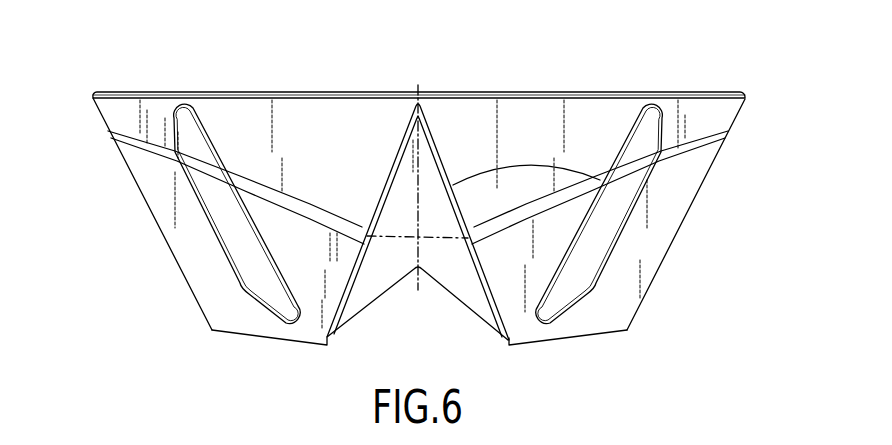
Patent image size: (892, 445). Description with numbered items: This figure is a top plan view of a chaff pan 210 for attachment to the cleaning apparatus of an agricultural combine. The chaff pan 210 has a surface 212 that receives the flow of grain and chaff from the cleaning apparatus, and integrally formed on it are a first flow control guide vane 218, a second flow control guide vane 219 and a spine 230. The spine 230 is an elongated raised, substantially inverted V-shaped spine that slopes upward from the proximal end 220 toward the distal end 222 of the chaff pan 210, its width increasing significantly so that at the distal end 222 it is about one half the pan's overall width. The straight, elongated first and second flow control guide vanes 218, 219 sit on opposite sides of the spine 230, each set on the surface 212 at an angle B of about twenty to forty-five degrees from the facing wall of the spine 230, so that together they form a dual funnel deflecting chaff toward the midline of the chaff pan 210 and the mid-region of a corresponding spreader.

The chaff pan 210 is at (757, 52).
The surface 212 is at (419, 215).
The first flow control guide vane 218 is at (663, 105).
The second flow control guide vane 219 is at (191, 106).
The proximal end 220 is at (295, 93).
The distal end 222 is at (576, 343).
The spine 230 is at (363, 301).
The angle B is at (526, 164).